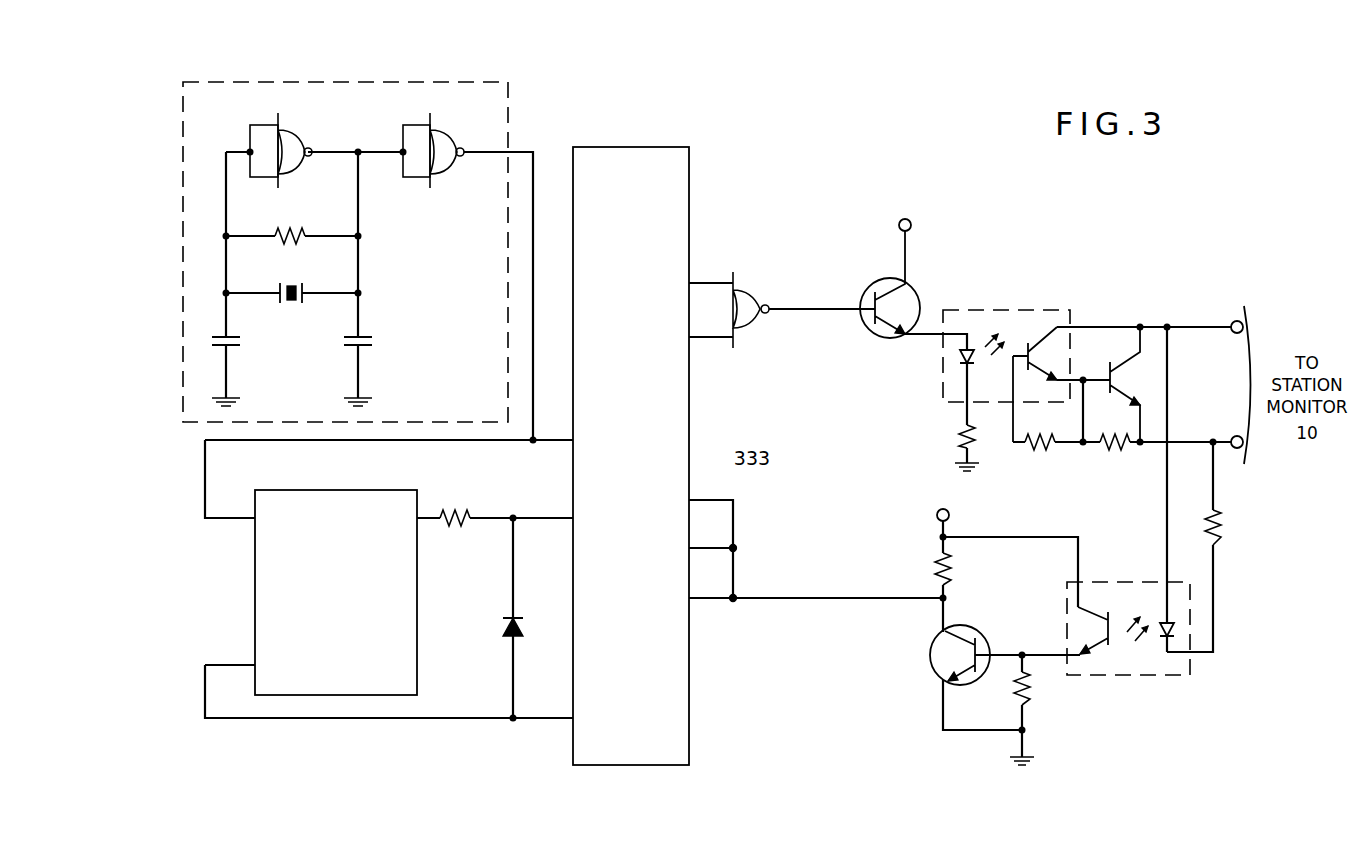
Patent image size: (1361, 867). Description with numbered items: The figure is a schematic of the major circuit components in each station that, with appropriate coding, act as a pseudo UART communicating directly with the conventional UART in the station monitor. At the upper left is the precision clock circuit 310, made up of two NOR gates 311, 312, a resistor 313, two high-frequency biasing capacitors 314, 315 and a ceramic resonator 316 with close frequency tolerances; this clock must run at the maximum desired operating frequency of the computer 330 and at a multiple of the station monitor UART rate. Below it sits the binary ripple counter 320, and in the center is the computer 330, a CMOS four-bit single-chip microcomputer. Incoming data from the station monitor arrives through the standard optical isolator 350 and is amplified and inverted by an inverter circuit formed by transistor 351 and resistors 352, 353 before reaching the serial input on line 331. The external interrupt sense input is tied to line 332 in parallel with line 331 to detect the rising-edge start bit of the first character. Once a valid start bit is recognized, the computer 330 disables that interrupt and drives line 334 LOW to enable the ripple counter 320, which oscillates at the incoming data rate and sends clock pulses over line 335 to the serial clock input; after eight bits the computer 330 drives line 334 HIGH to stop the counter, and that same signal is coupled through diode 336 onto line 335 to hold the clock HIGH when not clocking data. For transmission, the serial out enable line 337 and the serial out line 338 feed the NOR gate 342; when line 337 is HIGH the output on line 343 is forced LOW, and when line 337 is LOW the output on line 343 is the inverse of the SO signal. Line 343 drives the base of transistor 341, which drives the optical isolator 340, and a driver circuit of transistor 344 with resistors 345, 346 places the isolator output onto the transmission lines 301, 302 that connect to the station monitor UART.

The precision clock circuit 310 is at (510, 96).
The NOR gate 311 is at (288, 134).
The NOR gate 312 is at (440, 134).
The resistor 313 is at (292, 228).
The high-frequency biasing capacitor 314 is at (236, 346).
The high-frequency biasing capacitor 315 is at (366, 337).
The ceramic resonator 316 is at (305, 288).
The binary ripple counter 320 is at (343, 490).
The computer 330 is at (657, 147).
The serial input line 331 is at (710, 600).
The interrupt sense line 332 is at (712, 548).
The counter control line 334 is at (539, 722).
The serial clock line 335 is at (538, 520).
The diode 336 is at (512, 628).
The serial out enable line 337 is at (708, 337).
The serial out line 338 is at (692, 283).
The optical isolator 340 is at (973, 310).
The transistor 341 is at (873, 278).
The NOR gate 342 is at (742, 290).
The NOR gate output line 343 is at (799, 312).
The transistor 344 is at (1115, 365).
The resistor 345 is at (1113, 442).
The resistor 346 is at (1043, 442).
The optical isolator 350 is at (1115, 582).
The transistor 351 is at (930, 655).
The resistor 352 is at (935, 560).
The resistor 353 is at (1030, 686).
The transmission line 301 is at (1185, 327).
The transmission line 302 is at (1185, 442).